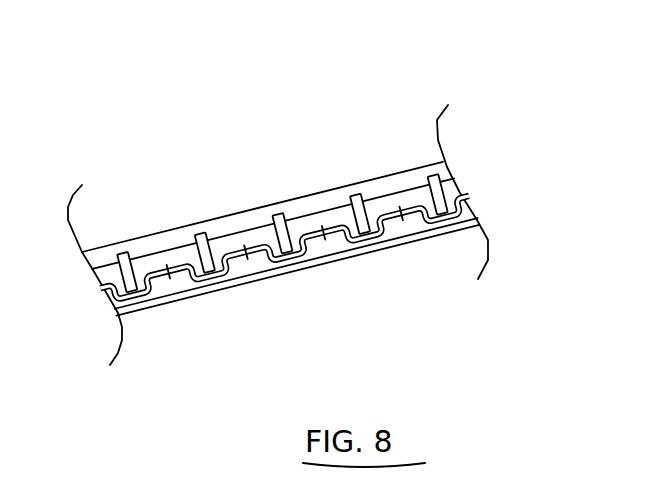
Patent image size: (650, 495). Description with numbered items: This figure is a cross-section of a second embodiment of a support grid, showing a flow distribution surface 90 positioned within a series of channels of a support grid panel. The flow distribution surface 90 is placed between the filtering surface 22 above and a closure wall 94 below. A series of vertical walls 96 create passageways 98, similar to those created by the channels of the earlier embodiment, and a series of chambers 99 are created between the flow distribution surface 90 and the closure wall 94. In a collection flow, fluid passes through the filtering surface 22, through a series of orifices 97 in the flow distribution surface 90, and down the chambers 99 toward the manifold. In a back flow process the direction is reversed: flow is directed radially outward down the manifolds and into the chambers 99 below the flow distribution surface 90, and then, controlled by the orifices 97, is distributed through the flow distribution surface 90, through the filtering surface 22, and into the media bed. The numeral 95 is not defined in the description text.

The filtering surface 22 is at (213, 218).
The flow distribution surface 90 is at (278, 206).
The closure wall 94 is at (356, 258).
The gap 95 is at (227, 247).
The vertical walls 96 is at (443, 182).
The orifices 97 is at (294, 226).
The passageways 98 is at (286, 215).
The chambers 99 is at (249, 299).